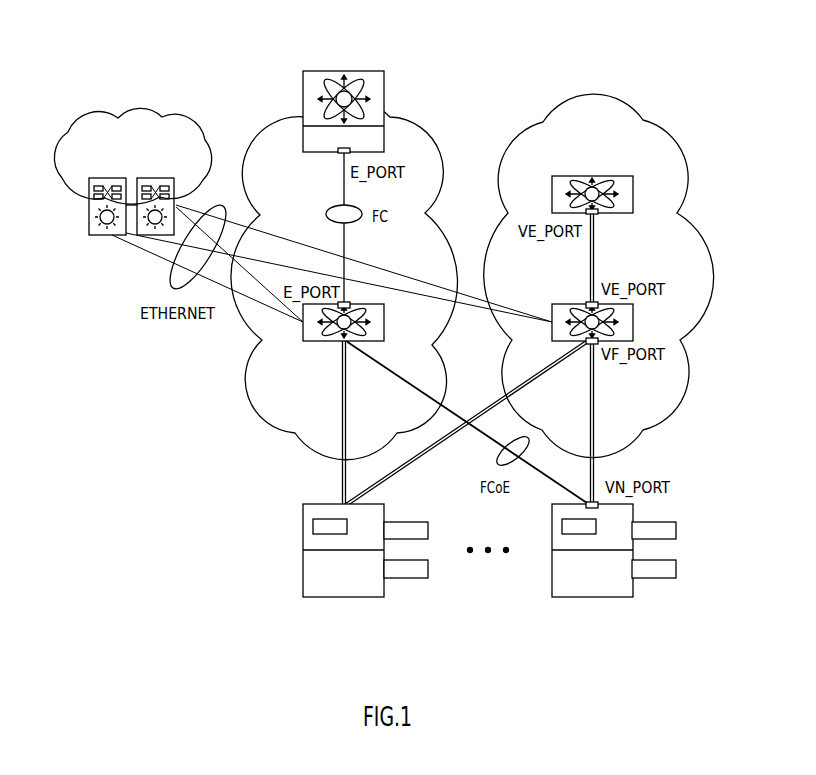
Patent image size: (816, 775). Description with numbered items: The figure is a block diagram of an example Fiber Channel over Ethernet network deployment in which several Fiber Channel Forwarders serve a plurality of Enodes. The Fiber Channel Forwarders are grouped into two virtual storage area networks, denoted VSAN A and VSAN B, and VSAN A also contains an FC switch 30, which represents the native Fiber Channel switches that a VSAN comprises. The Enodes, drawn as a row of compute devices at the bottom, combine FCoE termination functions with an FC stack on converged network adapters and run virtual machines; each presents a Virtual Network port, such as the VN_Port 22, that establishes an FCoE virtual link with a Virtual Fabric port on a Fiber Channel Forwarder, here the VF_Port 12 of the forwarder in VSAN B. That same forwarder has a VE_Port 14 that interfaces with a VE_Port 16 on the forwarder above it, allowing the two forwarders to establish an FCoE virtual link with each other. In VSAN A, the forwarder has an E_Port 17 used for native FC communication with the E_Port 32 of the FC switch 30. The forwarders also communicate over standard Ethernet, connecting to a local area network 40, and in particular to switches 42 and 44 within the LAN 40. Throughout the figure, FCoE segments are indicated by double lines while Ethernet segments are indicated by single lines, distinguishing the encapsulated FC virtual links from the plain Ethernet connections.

The local area network 40 is at (153, 112).
The switch 42 is at (89, 226).
The switch 44 is at (158, 176).
The FC switch 30 is at (384, 93).
The E_Port 32 is at (336, 150).
The VF_Port 12 is at (584, 341).
The VE_Port 14 is at (584, 303).
The VE_Port 16 is at (600, 213).
The E_Port 17 is at (350, 305).
The VN_Port 22 is at (585, 505).